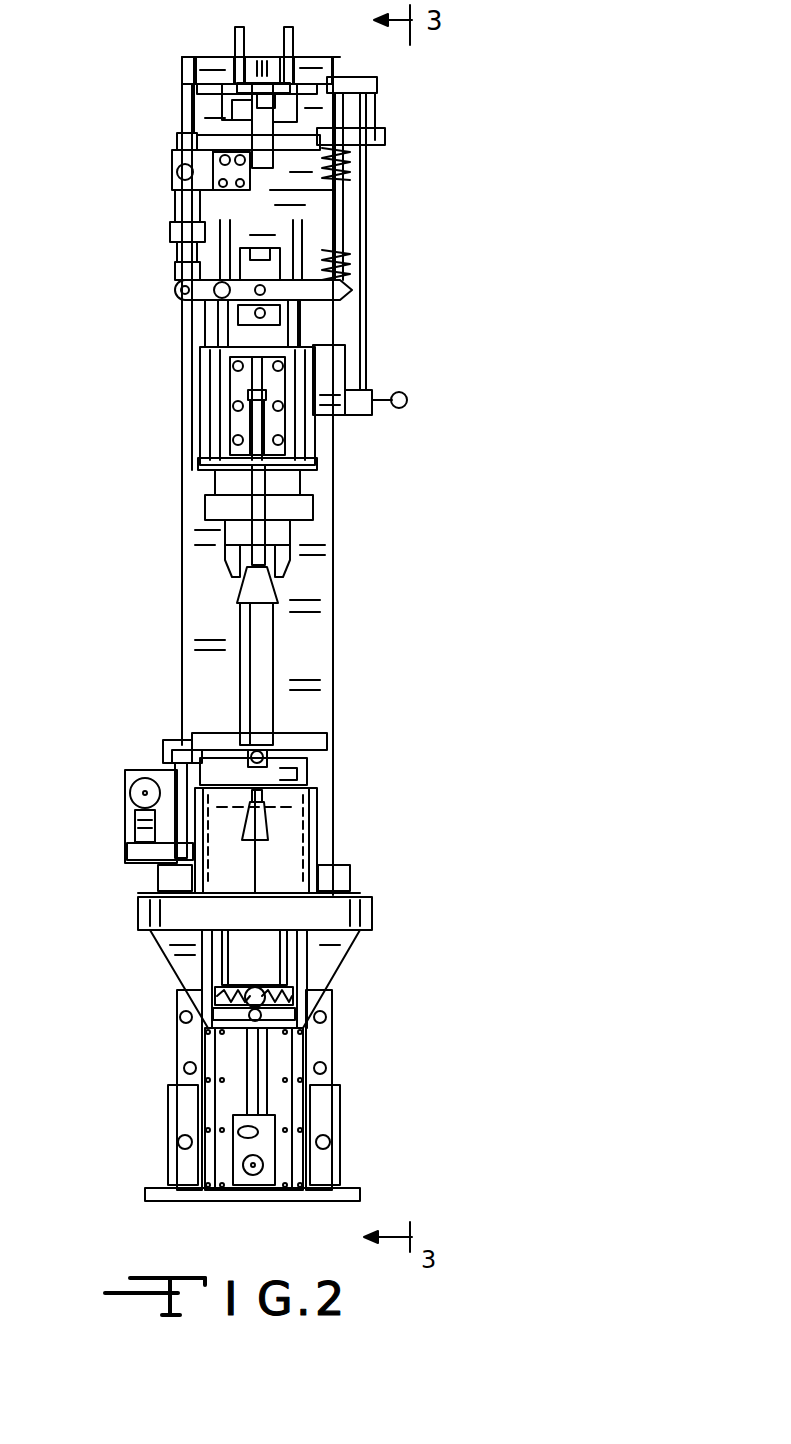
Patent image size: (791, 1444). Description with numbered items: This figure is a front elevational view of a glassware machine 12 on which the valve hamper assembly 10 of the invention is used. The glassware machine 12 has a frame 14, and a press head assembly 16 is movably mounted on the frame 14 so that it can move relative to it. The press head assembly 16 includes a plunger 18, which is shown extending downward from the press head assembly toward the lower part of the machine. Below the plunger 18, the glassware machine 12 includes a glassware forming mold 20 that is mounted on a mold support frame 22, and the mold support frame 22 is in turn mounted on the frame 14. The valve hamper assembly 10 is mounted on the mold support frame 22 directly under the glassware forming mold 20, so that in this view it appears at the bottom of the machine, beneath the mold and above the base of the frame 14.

The valve hamper assembly 10 is at (290, 965).
The glassware machine 12 is at (336, 462).
The frame 14 is at (336, 576).
The press head assembly 16 is at (208, 360).
The plunger 18 is at (242, 607).
The glassware forming mold 20 is at (318, 830).
The mold support frame 22 is at (150, 950).